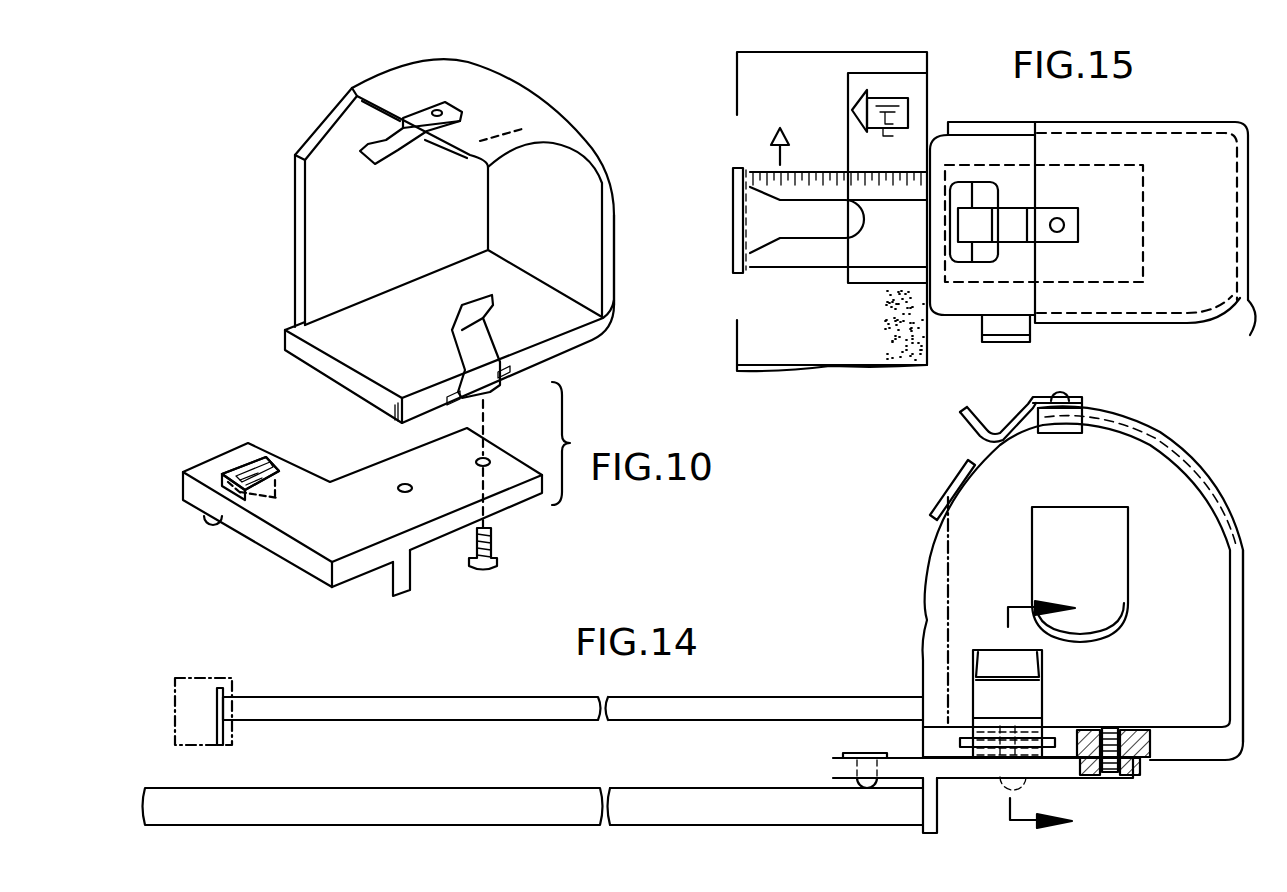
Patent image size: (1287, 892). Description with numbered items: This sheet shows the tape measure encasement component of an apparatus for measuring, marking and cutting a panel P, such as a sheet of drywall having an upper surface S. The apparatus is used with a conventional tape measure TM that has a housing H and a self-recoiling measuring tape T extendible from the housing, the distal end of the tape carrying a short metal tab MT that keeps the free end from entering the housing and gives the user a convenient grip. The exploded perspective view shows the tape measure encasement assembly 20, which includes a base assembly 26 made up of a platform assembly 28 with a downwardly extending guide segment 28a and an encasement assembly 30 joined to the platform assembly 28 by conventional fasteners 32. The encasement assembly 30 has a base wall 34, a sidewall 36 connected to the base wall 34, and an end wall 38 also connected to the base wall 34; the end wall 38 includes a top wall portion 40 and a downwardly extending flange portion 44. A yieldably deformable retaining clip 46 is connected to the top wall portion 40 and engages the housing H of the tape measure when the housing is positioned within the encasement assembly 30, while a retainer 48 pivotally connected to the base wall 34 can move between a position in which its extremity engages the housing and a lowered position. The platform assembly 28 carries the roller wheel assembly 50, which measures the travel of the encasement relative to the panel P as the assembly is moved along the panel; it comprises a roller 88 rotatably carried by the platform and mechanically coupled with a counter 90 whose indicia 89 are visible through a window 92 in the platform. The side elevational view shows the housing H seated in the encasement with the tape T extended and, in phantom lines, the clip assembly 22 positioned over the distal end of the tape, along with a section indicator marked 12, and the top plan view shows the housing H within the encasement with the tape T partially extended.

In FIG. 10, the tape measure encasement assembly 20 is at (252, 218).
In FIG. 14, the tape measure encasement assembly 20 is at (925, 490).
In FIG. 14, the clip assembly 22 is at (195, 680).
In FIG. 10, the base assembly 26 is at (270, 428).
In FIG. 15, the base assembly 26 is at (885, 287).
In FIG. 14, the base assembly 26 is at (888, 745).
In FIG. 10, the platform assembly 28 is at (302, 573).
In FIG. 15, the platform assembly 28 is at (838, 120).
In FIG. 14, the platform assembly 28 is at (833, 770).
In FIG. 10, the guide segment 28a is at (383, 580).
In FIG. 15, the guide segment 28a is at (930, 212).
In FIG. 14, the guide segment 28a is at (930, 805).
In FIG. 10, the encasement assembly 30 is at (368, 73).
In FIG. 15, the encasement assembly 30 is at (1180, 155).
In FIG. 14, the encasement assembly 30 is at (1226, 490).
In FIG. 10, the fasteners 32 is at (495, 548).
In FIG. 14, the fasteners 32 is at (1110, 774).
In FIG. 10, the base wall 34 is at (560, 360).
In FIG. 14, the base wall 34 is at (1197, 758).
In FIG. 10, the sidewall 36 is at (320, 265).
In FIG. 15, the sidewall 36 is at (1222, 122).
In FIG. 10, the end wall 38 is at (617, 222).
In FIG. 15, the end wall 38 is at (1249, 336).
In FIG. 10, the top wall portion 40 is at (485, 95).
In FIG. 14, the top wall portion 40 is at (1150, 425).
In FIG. 10, the flange portion 44 is at (515, 138).
In FIG. 14, the flange portion 44 is at (1082, 435).
In FIG. 10, the retaining clip 46 is at (390, 170).
In FIG. 15, the retaining clip 46 is at (1070, 225).
In FIG. 14, the retaining clip 46 is at (965, 425).
In FIG. 10, the retainer 48 is at (465, 338).
In FIG. 15, the retainer 48 is at (1005, 335).
In FIG. 14, the retainer 48 is at (1035, 688).
In FIG. 10, the roller wheel assembly 50 is at (245, 460).
In FIG. 15, the roller wheel assembly 50 is at (893, 85).
In FIG. 10, the roller 88 is at (215, 527).
In FIG. 14, the roller 88 is at (865, 785).
In FIG. 10, the indicia 89 is at (258, 462).
In FIG. 15, the indicia 89 is at (888, 150).
In FIG. 10, the counter 90 is at (270, 500).
In FIG. 10, the window 92 is at (275, 468).
In FIG. 15, the window 92 is at (907, 110).
In FIG. 14, the window 92 is at (860, 752).
In FIG. 14, the section line 12 is at (1020, 719).
In FIG. 15, the housing H is at (958, 305).
In FIG. 14, the housing H is at (950, 553).
In FIG. 15, the measuring tape T is at (833, 262).
In FIG. 14, the measuring tape T is at (490, 700).
In FIG. 15, the metal tab MT is at (742, 237).
In FIG. 14, the metal tab MT is at (224, 733).
In FIG. 15, the panel P is at (843, 358).
In FIG. 14, the panel P is at (415, 793).
In FIG. 15, the upper surface S is at (832, 211).
In FIG. 14, the upper surface S is at (505, 787).
In FIG. 14, the tape measure TM is at (808, 665).